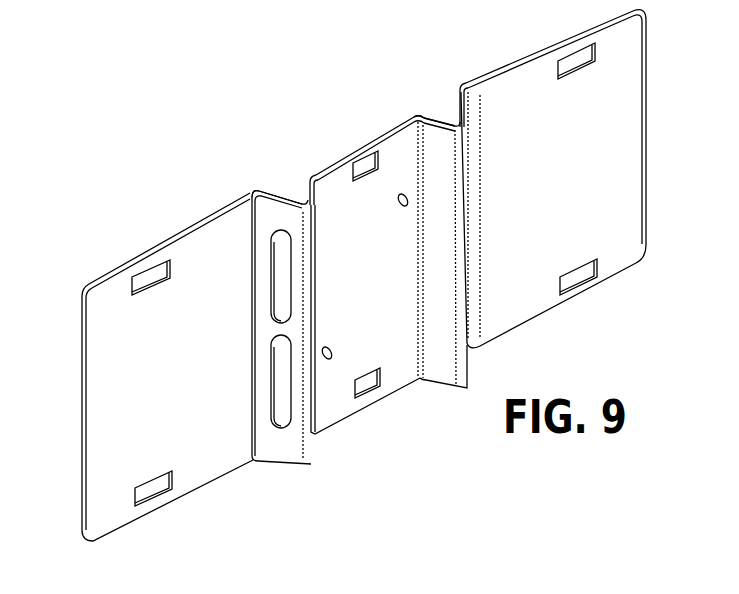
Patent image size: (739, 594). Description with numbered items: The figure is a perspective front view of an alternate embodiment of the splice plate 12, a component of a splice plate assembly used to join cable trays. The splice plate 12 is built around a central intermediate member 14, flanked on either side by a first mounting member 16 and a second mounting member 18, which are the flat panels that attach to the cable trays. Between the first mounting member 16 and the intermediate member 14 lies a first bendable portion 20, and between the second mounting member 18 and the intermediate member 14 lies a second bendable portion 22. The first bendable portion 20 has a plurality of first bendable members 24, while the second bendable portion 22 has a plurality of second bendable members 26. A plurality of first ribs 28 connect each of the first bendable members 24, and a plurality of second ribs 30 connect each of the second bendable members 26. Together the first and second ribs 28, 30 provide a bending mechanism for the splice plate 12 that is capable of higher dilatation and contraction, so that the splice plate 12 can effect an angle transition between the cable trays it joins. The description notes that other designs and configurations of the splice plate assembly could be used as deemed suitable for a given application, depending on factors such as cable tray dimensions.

The splice plate 12 is at (363, 275).
The intermediate member 14 is at (337, 402).
The first mounting member 16 is at (103, 413).
The second mounting member 18 is at (623, 173).
The first bendable portion 20 is at (275, 176).
The second bendable portion 22 is at (435, 101).
The first bendable members 24 is at (282, 443).
The second bendable members 26 is at (447, 370).
The first ribs 28 is at (308, 200).
The second ribs 30 is at (459, 85).